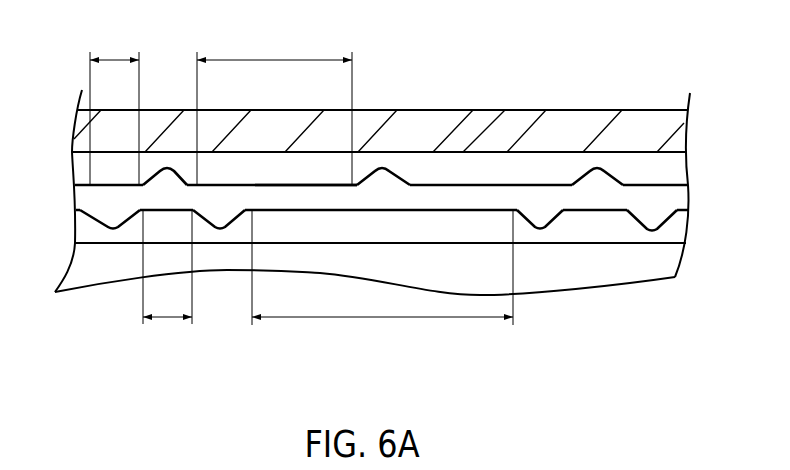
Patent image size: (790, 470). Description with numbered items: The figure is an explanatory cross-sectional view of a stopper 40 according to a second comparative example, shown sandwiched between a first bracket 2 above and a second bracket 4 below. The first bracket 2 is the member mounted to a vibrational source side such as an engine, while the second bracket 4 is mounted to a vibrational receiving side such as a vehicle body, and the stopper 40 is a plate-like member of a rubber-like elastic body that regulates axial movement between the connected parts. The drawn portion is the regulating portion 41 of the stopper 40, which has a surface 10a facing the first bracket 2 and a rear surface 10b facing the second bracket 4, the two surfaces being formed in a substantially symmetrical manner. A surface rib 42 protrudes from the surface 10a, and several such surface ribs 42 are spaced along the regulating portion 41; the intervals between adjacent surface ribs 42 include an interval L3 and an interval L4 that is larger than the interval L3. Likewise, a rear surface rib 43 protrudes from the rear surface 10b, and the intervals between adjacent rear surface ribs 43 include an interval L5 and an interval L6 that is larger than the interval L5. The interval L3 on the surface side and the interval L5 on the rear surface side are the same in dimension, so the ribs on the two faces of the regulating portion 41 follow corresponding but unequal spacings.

The first bracket 2 is at (365, 124).
The stopper 40 is at (450, 186).
The surface rib 42 is at (168, 167).
The surface 10a is at (255, 184).
The regulating portion 41 is at (300, 199).
The rear surface rib 43 is at (542, 223).
The rear surface 10b is at (413, 212).
The second bracket 4 is at (539, 276).
The interval L3 is at (114, 107).
The interval L4 is at (274, 107).
The interval L5 is at (167, 279).
The interval L6 is at (383, 320).